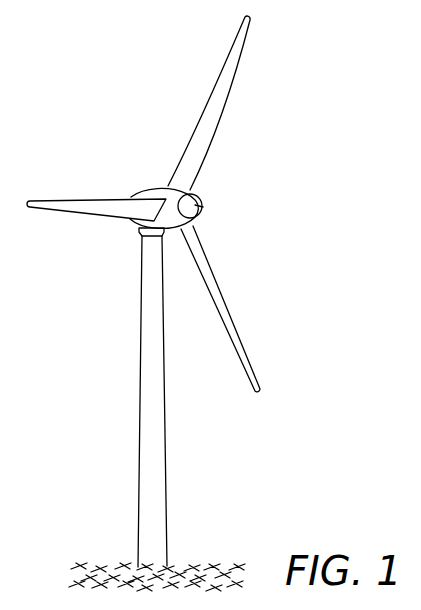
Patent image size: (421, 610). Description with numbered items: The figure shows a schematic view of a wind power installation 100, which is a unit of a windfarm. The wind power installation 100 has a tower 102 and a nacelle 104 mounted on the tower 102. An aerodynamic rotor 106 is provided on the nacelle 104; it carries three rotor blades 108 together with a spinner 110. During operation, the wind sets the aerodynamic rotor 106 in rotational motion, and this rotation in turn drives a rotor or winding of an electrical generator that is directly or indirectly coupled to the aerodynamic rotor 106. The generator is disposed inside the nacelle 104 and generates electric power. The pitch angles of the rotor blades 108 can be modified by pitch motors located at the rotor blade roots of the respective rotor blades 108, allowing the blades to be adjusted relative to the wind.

The wind power installation 100 is at (120, 272).
The tower 102 is at (155, 455).
The nacelle 104 is at (150, 186).
The aerodynamic rotor 106 is at (240, 162).
The rotor blades 108 is at (63, 200).
The spinner 110 is at (200, 208).